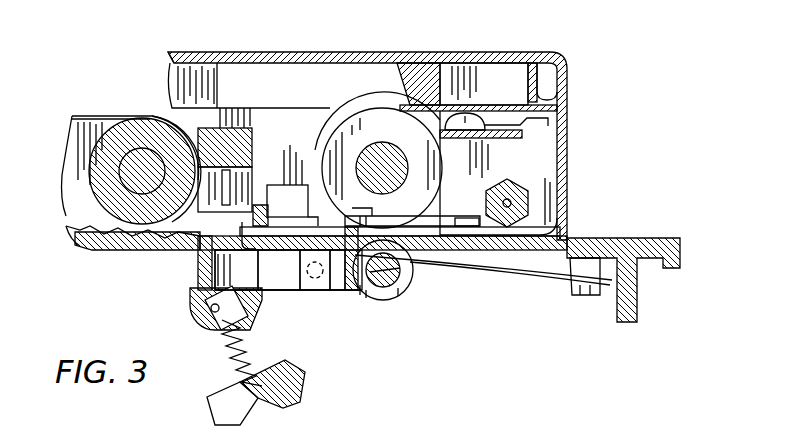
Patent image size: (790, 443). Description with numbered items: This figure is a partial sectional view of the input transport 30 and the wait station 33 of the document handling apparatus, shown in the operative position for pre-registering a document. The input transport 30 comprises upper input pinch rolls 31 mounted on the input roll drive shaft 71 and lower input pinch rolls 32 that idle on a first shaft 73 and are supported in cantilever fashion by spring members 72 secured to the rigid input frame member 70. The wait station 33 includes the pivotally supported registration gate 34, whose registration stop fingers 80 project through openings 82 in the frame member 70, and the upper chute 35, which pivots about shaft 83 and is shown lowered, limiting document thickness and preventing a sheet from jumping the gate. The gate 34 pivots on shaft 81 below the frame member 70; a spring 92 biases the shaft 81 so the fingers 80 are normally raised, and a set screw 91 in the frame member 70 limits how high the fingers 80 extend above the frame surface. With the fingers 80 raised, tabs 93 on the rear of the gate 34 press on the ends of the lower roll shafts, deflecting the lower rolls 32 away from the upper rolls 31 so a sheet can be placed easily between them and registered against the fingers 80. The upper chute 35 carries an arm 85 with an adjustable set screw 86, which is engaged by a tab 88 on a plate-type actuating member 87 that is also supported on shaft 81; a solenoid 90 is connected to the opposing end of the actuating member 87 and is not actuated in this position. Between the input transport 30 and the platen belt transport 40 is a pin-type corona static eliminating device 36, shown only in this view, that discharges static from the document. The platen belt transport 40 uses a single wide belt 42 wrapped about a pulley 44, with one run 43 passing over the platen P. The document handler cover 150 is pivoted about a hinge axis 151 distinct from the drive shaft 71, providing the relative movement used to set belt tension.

The input transport 30 is at (407, 44).
The upper input pinch rolls 31 is at (338, 140).
The lower input pinch rolls 32 is at (396, 296).
The wait station 33 is at (258, 300).
The registration gate 34 is at (282, 278).
The upper chute 35 is at (296, 229).
The static eliminating device 36 is at (252, 160).
The platen belt transport 40 is at (90, 111).
The belt 42 is at (72, 116).
The belt run 43 is at (66, 218).
The pulley 44 is at (154, 120).
The input frame member 70 is at (597, 238).
The input roll drive shaft 71 is at (374, 150).
The spring members 72 is at (492, 276).
The first shaft 73 is at (383, 300).
The registration stop fingers 80 is at (258, 235).
The gate pivot shaft 81 is at (320, 276).
The openings 82 is at (240, 232).
The chute pivot shaft 83 is at (513, 188).
The arm 85 is at (468, 218).
The adjustable set screw 86 is at (370, 216).
The actuating member 87 is at (296, 292).
The tab 88 is at (352, 292).
The solenoid 90 is at (302, 392).
The set screw 91 is at (200, 270).
The spring 92 is at (224, 370).
The tabs 93 is at (405, 276).
The document handler cover 150 is at (288, 52).
The hinge axis 151 is at (565, 108).
The platen P is at (100, 255).